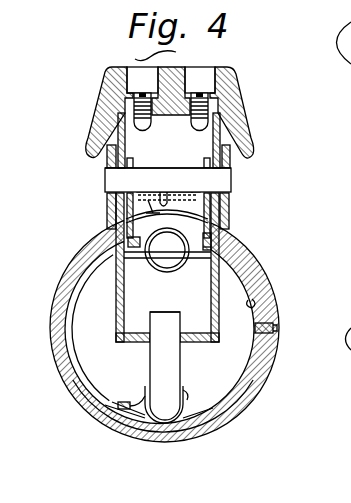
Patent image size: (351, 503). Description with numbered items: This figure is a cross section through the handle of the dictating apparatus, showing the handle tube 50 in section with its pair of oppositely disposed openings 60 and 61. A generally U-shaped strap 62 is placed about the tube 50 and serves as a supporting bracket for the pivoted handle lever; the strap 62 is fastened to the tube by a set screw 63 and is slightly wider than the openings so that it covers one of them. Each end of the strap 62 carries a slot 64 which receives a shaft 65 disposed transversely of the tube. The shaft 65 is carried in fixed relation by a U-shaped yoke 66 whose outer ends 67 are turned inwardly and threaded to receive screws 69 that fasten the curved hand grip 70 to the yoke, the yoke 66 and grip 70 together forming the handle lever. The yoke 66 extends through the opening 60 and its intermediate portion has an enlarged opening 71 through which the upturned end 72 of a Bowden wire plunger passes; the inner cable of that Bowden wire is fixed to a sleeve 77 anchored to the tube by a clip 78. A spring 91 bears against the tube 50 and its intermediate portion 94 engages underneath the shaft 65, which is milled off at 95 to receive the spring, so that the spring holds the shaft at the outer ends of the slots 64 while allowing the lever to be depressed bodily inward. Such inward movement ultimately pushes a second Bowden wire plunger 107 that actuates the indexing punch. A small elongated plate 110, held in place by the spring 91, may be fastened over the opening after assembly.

The handle tube 50 is at (282, 306).
The opening 60 is at (110, 208).
The opening 61 is at (207, 430).
The U-shaped strap 62 is at (66, 254).
The set screw 63 is at (277, 328).
The slot 64 is at (108, 192).
The shaft 65 is at (231, 172).
The U-shaped yoke 66 is at (225, 275).
The outer ends of the yoke 67 is at (118, 128).
The screws 69 is at (132, 99).
The curved hand grip 70 is at (235, 80).
The enlarged opening 71 is at (174, 338).
The upturned end of the Bowden wire plunger 72 is at (167, 325).
The sleeve 77 is at (187, 410).
The clip 78 is at (142, 400).
The spring 91 is at (188, 206).
The intermediate portion of the spring 94 is at (165, 190).
The milled portion of the shaft 95 is at (192, 168).
The Bowden wire plunger 107 is at (173, 240).
The plate 110 is at (150, 200).